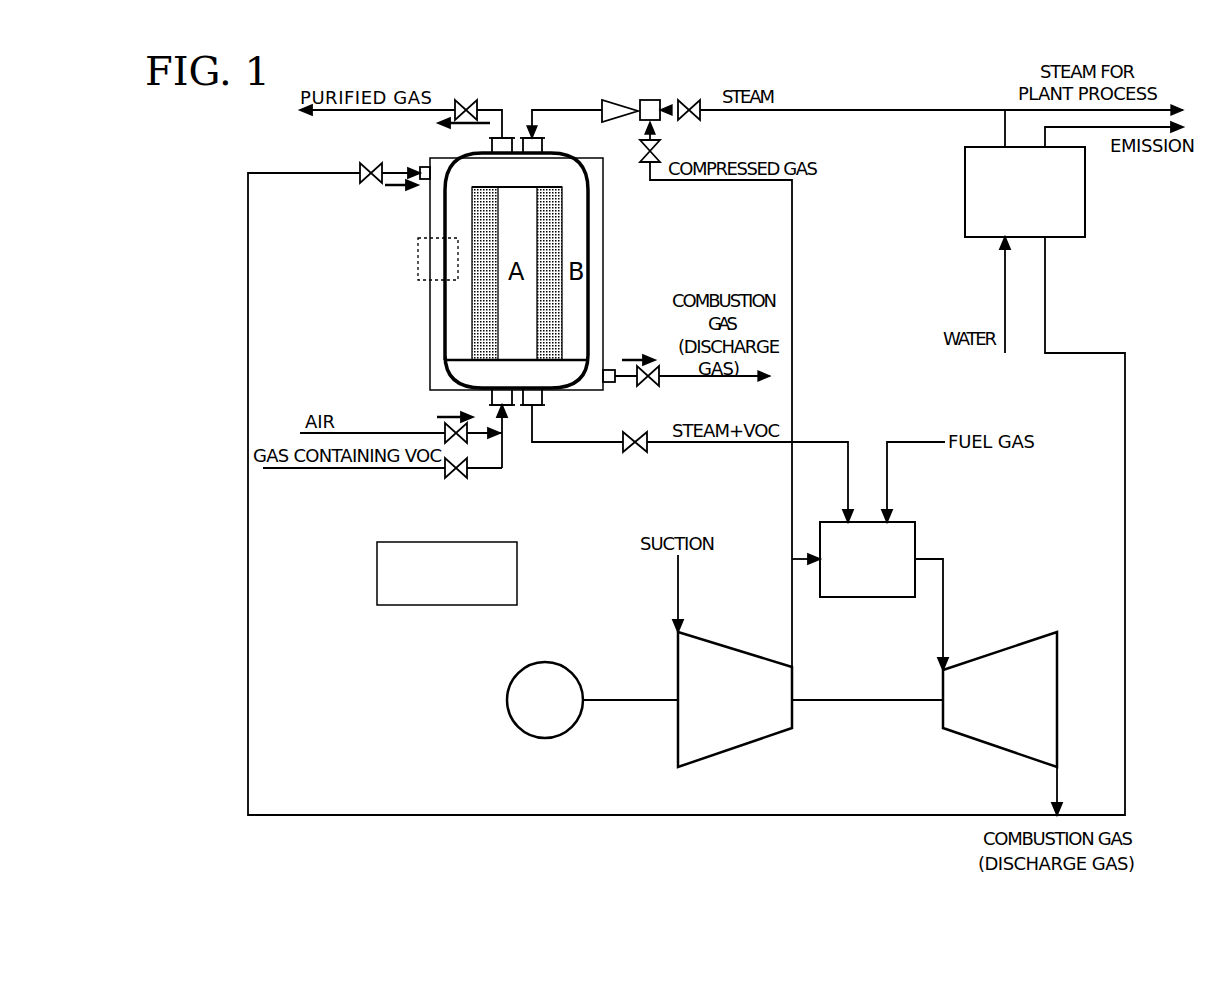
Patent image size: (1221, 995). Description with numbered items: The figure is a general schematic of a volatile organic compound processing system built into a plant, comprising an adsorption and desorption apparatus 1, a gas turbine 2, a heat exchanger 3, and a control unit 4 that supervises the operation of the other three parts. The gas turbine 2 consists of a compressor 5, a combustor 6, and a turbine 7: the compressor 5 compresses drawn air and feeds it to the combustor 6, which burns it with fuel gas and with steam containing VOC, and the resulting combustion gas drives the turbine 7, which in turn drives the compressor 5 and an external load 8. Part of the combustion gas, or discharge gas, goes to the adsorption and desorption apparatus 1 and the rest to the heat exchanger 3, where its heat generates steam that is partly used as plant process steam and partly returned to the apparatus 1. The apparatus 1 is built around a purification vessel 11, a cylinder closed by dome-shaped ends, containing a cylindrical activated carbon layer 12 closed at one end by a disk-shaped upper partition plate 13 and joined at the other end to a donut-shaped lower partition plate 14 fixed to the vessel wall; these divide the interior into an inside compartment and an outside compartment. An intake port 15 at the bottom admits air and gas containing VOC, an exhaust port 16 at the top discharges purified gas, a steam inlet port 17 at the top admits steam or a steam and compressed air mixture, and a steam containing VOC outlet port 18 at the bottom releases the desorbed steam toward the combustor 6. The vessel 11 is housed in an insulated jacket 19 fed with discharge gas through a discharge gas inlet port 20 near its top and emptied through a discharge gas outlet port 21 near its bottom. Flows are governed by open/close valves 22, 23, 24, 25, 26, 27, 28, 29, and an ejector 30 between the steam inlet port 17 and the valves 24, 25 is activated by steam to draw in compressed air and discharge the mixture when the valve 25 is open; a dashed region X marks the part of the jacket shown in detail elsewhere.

The adsorption and desorption apparatus 1 is at (552, 96).
The gas turbine 2 is at (1005, 560).
The heat exchanger 3 is at (965, 187).
The control unit 4 is at (392, 605).
The compressor 5 is at (720, 752).
The combustor 6 is at (872, 597).
The turbine 7 is at (1015, 645).
The load 8 is at (545, 661).
The purification vessel 11 is at (588, 300).
The activated carbon layer 12 is at (540, 322).
The upper partition plate 13 is at (510, 190).
The lower partition plate 14 is at (465, 357).
The intake port 15 is at (495, 400).
The exhaust port 16 is at (495, 140).
The steam inlet port 17 is at (535, 145).
The steam containing VOC outlet port 18 is at (545, 400).
The jacket 19 is at (603, 250).
The discharge gas inlet port 20 is at (420, 178).
The discharge gas outlet port 21 is at (608, 370).
The open/close valve 22 is at (465, 470).
The open/close valve 23 is at (466, 100).
The open/close valve 24 is at (689, 100).
The open/close valve 25 is at (660, 152).
The open/close valve 26 is at (640, 447).
The open/close valve 27 is at (450, 430).
The open/close valve 28 is at (372, 163).
The open/close valve 29 is at (647, 382).
The ejector 30 is at (618, 104).
The region X is at (418, 250).